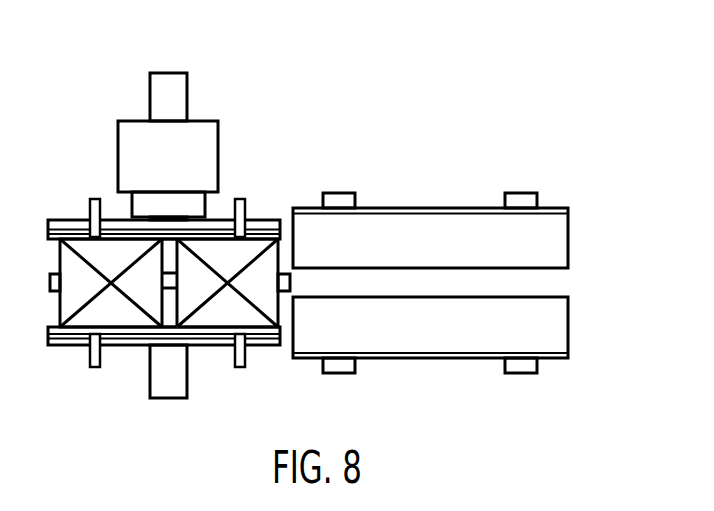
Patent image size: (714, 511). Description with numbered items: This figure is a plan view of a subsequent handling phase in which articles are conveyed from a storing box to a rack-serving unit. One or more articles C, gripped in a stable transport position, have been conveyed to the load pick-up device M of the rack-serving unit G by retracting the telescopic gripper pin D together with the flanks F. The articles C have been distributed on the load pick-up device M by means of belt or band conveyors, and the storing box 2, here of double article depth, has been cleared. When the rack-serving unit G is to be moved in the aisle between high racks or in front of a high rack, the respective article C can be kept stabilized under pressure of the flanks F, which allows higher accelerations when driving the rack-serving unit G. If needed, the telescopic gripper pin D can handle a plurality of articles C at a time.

The rack-serving unit G is at (227, 155).
The flanks F is at (217, 218).
The article C is at (83, 247).
The load pick-up device M is at (137, 357).
The telescopic gripper pin D is at (285, 292).
The storing box 2 is at (548, 283).